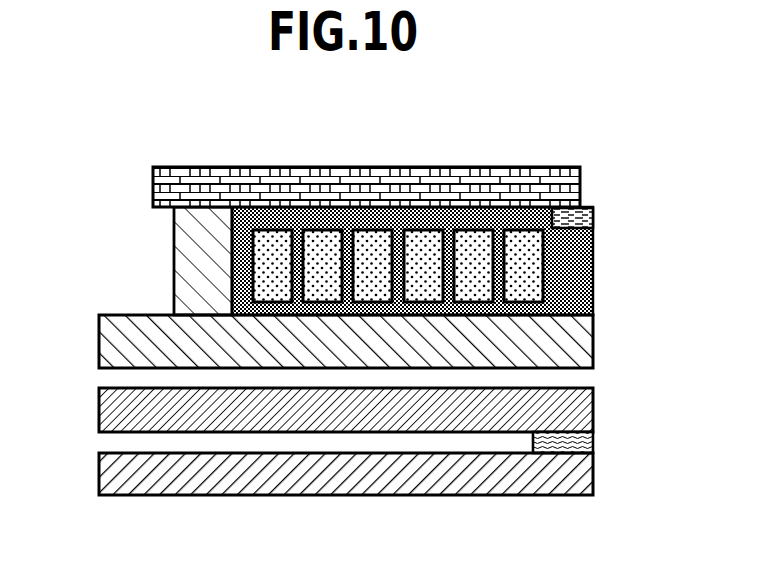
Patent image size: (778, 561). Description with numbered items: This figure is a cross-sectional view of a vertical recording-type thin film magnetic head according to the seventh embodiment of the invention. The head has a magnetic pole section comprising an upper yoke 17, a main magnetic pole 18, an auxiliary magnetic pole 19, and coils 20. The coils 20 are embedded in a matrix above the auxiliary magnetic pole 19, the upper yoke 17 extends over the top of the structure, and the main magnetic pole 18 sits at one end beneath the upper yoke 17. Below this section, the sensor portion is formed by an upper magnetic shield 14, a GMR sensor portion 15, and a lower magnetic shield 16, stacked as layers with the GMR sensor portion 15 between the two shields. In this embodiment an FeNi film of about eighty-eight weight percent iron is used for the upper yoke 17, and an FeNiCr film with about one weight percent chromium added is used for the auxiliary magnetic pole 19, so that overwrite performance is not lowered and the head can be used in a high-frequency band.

The upper magnetic shield 14 is at (563, 400).
The GMR sensor portion 15 is at (596, 441).
The lower magnetic shield 16 is at (560, 477).
The upper yoke 17 is at (540, 184).
The main magnetic pole 18 is at (583, 216).
The auxiliary magnetic pole 19 is at (567, 333).
The coils 20 is at (370, 240).